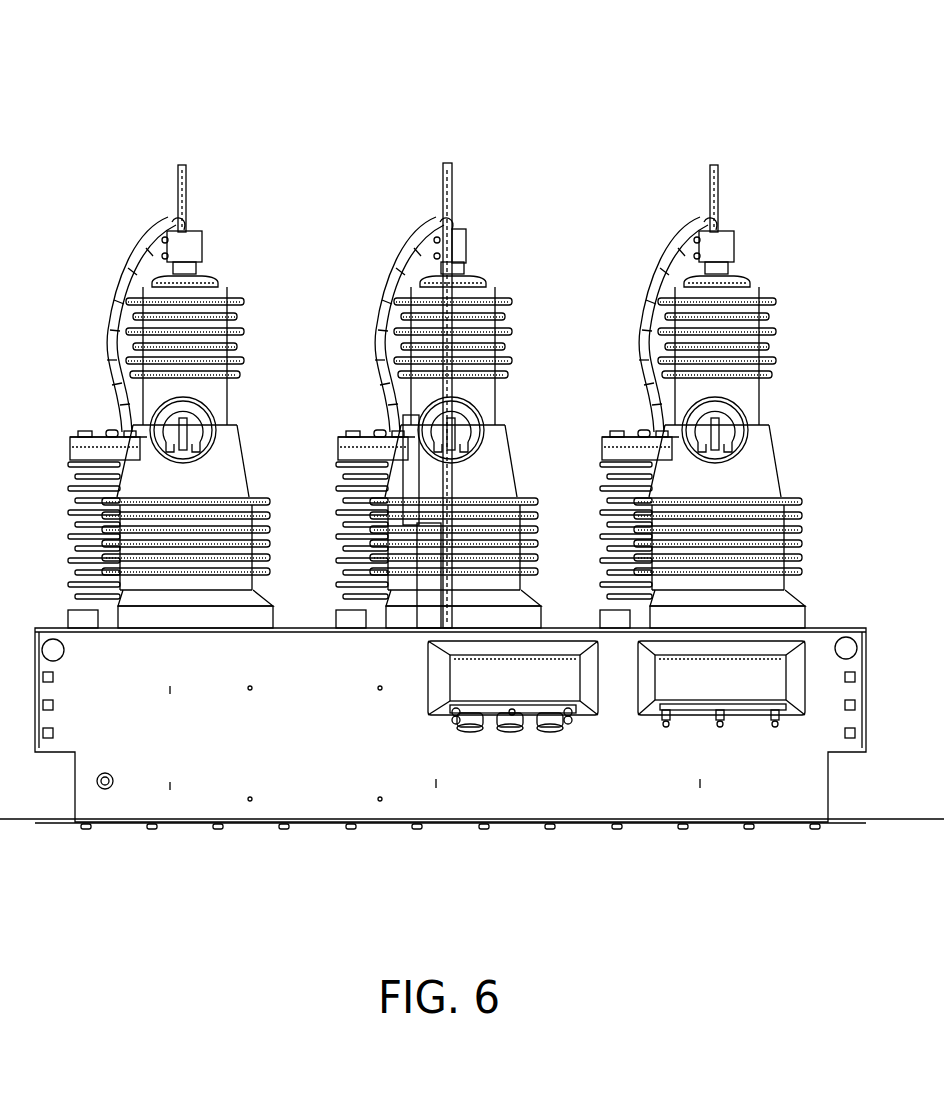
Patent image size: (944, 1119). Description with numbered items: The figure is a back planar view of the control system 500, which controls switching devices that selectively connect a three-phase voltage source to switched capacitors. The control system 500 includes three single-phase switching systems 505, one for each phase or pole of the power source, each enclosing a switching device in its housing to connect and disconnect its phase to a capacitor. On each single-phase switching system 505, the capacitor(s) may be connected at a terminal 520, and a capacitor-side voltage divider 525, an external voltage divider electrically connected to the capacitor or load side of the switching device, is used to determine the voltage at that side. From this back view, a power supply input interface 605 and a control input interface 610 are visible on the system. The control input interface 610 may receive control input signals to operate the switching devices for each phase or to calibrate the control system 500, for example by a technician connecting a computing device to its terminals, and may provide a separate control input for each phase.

The control system 500 is at (254, 84).
The single-phase switching system 505 is at (274, 352).
The terminal 520 is at (187, 175).
The capacitor-side voltage divider 525 is at (76, 446).
The power supply input interface 605 is at (455, 695).
The control input interface 610 is at (672, 695).